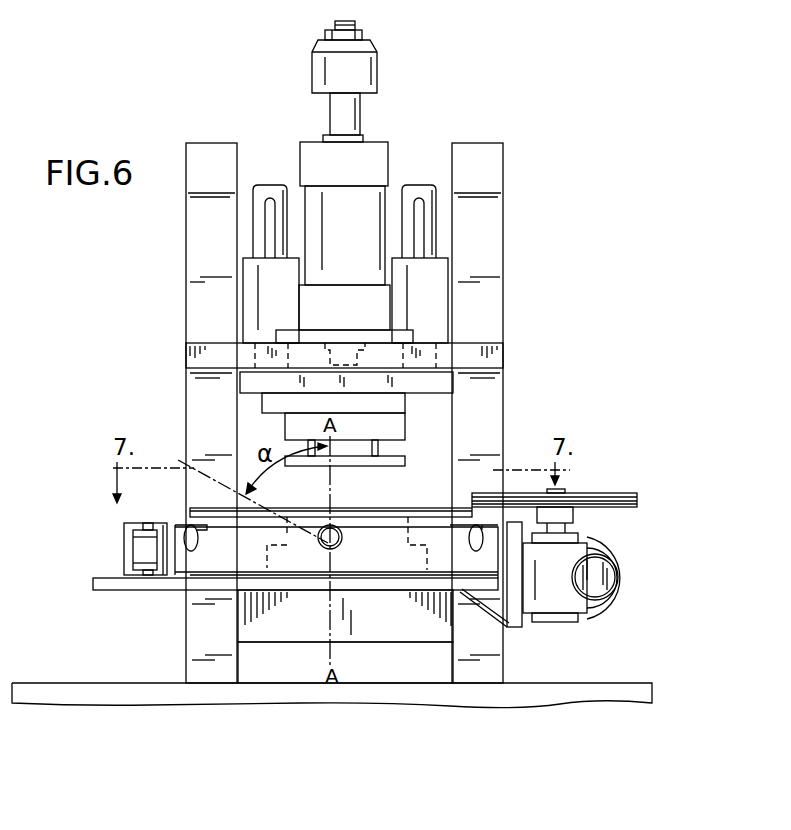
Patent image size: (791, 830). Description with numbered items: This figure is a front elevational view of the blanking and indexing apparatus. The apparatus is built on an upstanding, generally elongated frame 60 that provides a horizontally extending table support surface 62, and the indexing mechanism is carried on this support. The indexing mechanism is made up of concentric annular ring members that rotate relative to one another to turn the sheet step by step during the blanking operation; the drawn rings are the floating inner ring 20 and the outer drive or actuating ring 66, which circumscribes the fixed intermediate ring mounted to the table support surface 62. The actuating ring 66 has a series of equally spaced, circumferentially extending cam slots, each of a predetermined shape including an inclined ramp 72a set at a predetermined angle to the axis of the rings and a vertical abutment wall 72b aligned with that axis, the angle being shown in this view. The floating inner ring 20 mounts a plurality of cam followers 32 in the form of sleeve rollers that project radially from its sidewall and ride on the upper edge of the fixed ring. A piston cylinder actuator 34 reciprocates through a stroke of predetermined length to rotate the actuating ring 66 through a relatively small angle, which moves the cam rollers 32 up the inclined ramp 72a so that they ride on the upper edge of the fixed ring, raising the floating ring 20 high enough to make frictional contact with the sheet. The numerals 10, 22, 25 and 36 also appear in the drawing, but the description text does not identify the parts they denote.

The press frame 10 is at (223, 10).
The floating inner ring 20 is at (425, 517).
The upper die block 22 is at (447, 441).
The hydraulic cylinder 25 is at (366, 171).
The cam followers 32 is at (345, 556).
The piston cylinder actuator 34 is at (128, 538).
The hand wheel bar 36 is at (618, 493).
The frame 60 is at (27, 683).
The table support surface 62 is at (122, 586).
The actuating ring 66 is at (262, 17).
The inclined ramp 72a is at (303, 530).
The vertical abutment wall 72b is at (348, 532).